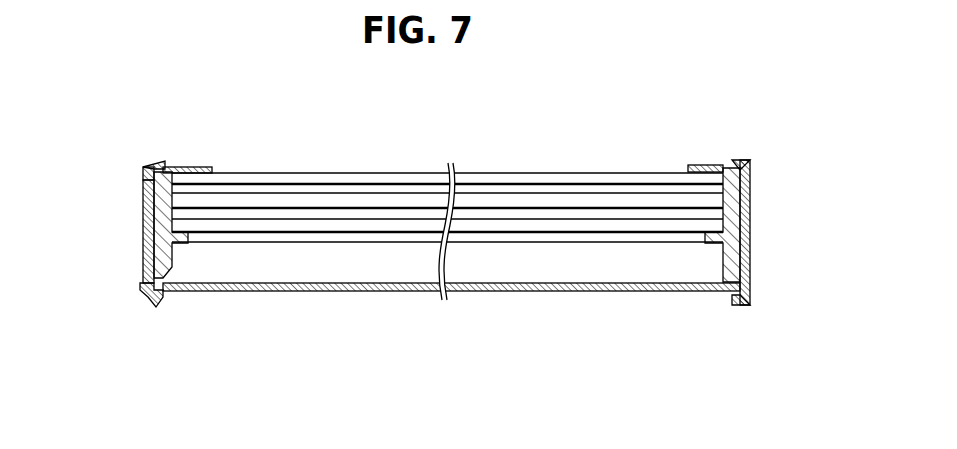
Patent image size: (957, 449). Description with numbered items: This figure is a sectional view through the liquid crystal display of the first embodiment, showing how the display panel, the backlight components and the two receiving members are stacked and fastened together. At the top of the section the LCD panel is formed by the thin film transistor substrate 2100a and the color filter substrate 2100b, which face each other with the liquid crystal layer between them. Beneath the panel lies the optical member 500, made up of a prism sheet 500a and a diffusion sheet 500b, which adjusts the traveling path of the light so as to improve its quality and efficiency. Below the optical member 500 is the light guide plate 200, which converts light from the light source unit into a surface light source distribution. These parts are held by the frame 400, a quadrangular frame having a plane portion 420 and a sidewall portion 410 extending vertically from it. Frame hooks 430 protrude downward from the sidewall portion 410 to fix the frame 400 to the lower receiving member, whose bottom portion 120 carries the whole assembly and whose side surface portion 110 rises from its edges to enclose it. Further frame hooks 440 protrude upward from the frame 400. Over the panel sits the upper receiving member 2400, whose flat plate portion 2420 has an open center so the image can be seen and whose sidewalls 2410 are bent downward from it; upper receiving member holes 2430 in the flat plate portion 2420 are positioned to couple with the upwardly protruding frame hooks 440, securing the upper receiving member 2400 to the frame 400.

The side surface portion 110 is at (752, 273).
The bottom portion 120 is at (558, 291).
The light guide plate 200 is at (630, 276).
The frame 400 is at (70, 162).
The sidewall portion 410 is at (152, 210).
The plane portion 420 is at (170, 236).
The frame hooks 430 is at (148, 298).
The frame hooks 440 is at (150, 166).
The optical member 500 is at (830, 198).
The prism sheet 500a is at (716, 203).
The diffusion sheet 500b is at (716, 215).
The thin film transistor substrate 2100a is at (546, 190).
The color filter substrate 2100b is at (620, 176).
The upper receiving member 2400 is at (691, 423).
The sidewalls 2410 is at (752, 250).
The flat plate portion 2420 is at (181, 167).
The upper receiving member holes 2430 is at (165, 162).